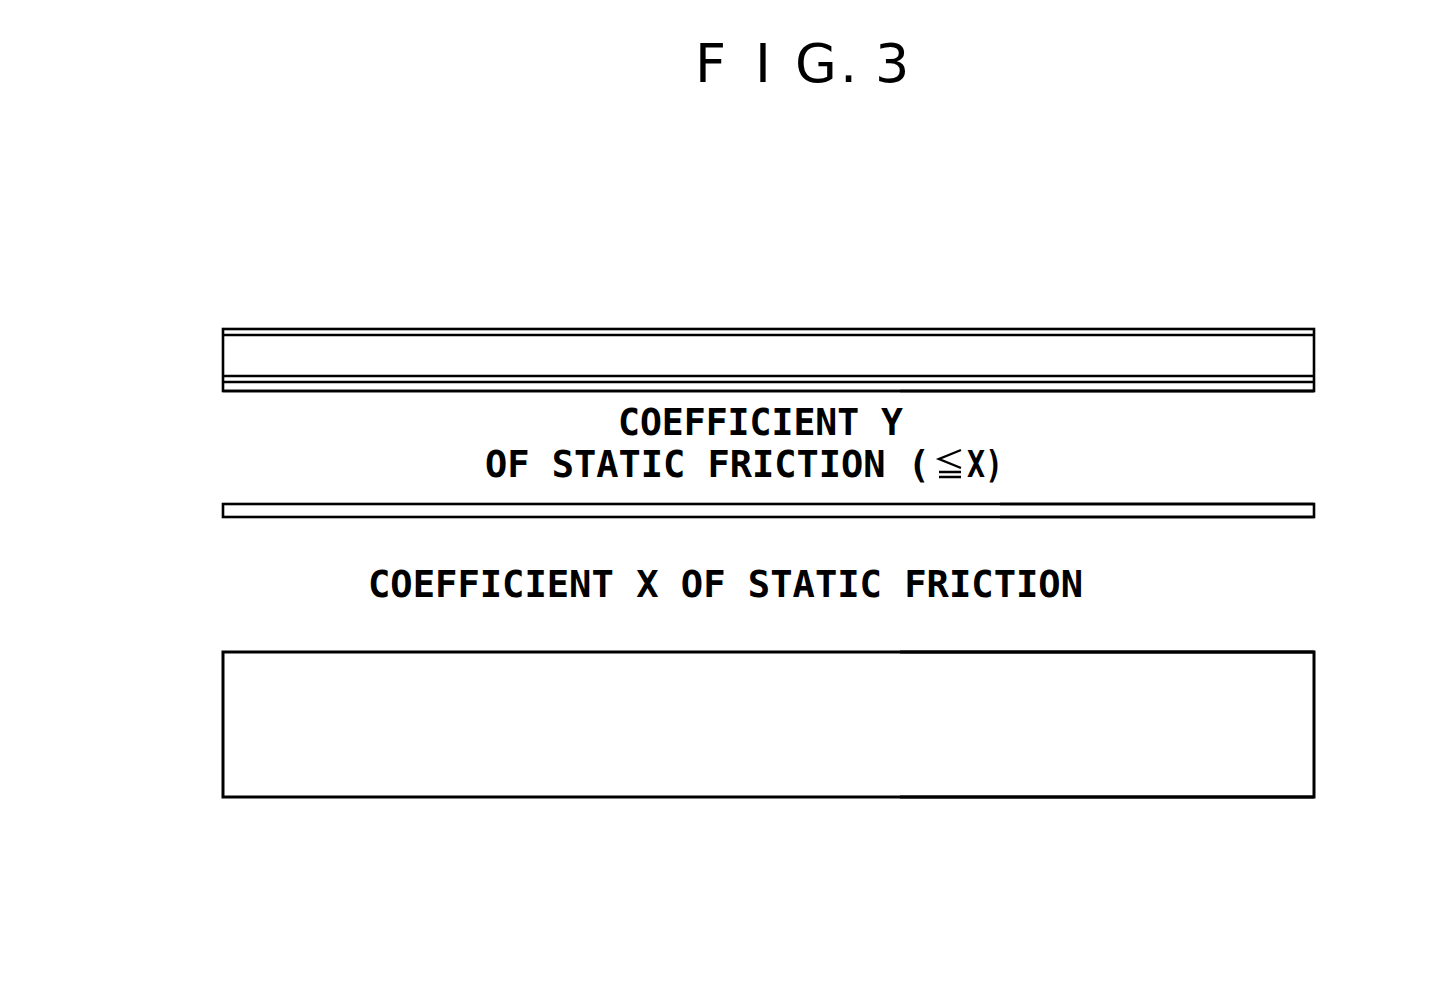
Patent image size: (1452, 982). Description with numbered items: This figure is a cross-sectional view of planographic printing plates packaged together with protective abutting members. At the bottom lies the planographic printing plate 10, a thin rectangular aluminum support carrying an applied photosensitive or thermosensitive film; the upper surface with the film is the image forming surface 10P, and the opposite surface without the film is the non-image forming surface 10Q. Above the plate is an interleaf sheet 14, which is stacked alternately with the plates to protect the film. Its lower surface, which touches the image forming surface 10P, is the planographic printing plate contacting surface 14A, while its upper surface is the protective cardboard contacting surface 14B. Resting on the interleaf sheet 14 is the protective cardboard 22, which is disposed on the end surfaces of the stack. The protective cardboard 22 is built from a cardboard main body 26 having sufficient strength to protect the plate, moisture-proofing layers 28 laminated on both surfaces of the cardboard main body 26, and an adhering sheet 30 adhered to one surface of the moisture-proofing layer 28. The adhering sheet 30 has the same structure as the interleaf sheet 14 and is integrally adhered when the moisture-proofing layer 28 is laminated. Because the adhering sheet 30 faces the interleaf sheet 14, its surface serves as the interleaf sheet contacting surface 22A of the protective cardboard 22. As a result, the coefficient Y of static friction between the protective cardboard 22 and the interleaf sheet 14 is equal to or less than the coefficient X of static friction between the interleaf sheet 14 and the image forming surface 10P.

The planographic printing plate 10 is at (221, 762).
The image forming surface 10P is at (1162, 652).
The non-image forming surface 10Q is at (1015, 798).
The interleaf sheet 14 is at (221, 507).
The planographic printing plate contacting surface 14A is at (1255, 518).
The protective cardboard contacting surface 14B is at (1280, 503).
The protective cardboard 22 is at (221, 351).
The interleaf sheet contacting surface 22A is at (1055, 392).
The cardboard main body 26 is at (1302, 350).
The moisture-proofing layer 28 is at (1319, 331).
The adhering sheet 30 is at (1247, 389).